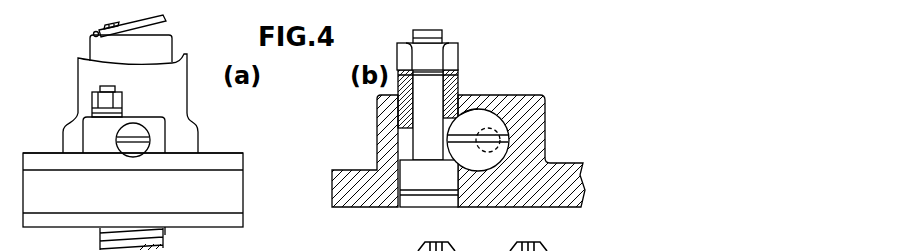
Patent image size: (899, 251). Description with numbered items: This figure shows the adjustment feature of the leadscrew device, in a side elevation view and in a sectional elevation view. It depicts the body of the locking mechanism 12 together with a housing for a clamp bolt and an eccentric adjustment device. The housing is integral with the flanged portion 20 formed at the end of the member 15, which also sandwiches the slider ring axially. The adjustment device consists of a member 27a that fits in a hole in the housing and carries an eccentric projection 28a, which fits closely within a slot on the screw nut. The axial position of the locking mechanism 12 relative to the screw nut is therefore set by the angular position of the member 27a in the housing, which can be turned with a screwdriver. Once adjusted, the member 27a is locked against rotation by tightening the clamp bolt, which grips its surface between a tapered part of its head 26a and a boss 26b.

The locking mechanism 12 is at (141, 205).
The member 15 is at (80, 77).
The flanged portion 20 is at (235, 151).
The head 26a is at (405, 170).
The boss 26b is at (457, 75).
The member 27a is at (488, 120).
The eccentric projection 28a is at (500, 147).